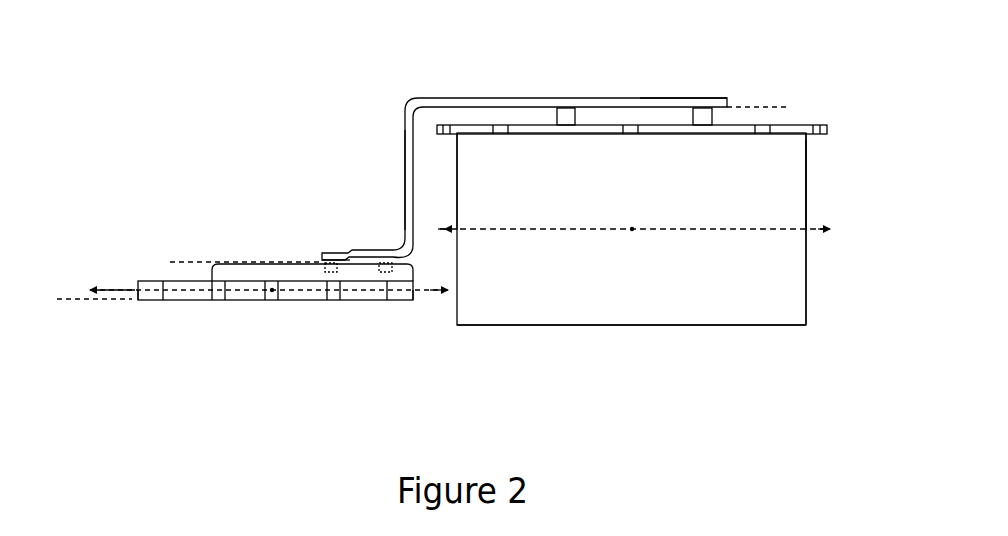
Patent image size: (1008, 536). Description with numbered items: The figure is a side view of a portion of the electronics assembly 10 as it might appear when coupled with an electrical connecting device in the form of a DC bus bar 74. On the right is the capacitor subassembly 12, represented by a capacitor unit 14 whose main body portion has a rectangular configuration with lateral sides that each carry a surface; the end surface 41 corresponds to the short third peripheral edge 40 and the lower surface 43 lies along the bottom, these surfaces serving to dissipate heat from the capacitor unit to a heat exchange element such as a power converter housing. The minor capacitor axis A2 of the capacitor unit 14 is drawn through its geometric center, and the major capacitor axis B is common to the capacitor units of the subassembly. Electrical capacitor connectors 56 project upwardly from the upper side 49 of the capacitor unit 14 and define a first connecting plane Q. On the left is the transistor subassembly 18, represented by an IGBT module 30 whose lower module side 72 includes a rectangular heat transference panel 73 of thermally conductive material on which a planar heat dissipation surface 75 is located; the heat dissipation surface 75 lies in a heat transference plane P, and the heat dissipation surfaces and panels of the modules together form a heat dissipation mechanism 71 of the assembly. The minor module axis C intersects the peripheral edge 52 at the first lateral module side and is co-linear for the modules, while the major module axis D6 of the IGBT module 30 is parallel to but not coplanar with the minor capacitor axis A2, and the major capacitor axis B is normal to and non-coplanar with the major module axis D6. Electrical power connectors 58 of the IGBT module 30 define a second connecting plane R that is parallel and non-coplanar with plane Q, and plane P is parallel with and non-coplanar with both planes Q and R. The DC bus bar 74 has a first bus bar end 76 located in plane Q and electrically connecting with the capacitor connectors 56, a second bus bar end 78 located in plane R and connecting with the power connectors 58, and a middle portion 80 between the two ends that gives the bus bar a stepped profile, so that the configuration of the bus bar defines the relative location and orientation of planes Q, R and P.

The electronics assembly 10 is at (858, 60).
The capacitor subassembly 12 is at (720, 386).
The capacitor unit 14 is at (806, 257).
The transistor subassembly 18 is at (298, 386).
The IGBT module 30 is at (148, 292).
The third peripheral edge 40 is at (647, 128).
The end surface 41 is at (646, 326).
The lower surface 43 is at (571, 327).
The upper side 49 is at (807, 124).
The peripheral edge 52 is at (305, 291).
The electrical capacitor connectors 56 is at (565, 121).
The electrical power connectors 58 is at (380, 268).
The heat dissipation mechanism 71 is at (331, 302).
The lower module side 72 is at (177, 302).
The heat transference panel 73 is at (213, 300).
The DC bus bar 74 is at (453, 97).
The heat dissipation surface 75 is at (248, 302).
The first bus bar end 76 is at (690, 97).
The second bus bar end 78 is at (333, 253).
The middle portion 80 is at (405, 132).
The minor capacitor axis A2 is at (543, 231).
The major capacitor axis B is at (632, 231).
The minor module axis C is at (273, 292).
The major module axis D6 is at (110, 289).
The heat transference plane P is at (66, 297).
The first connecting plane Q is at (765, 107).
The second connecting plane R is at (193, 261).